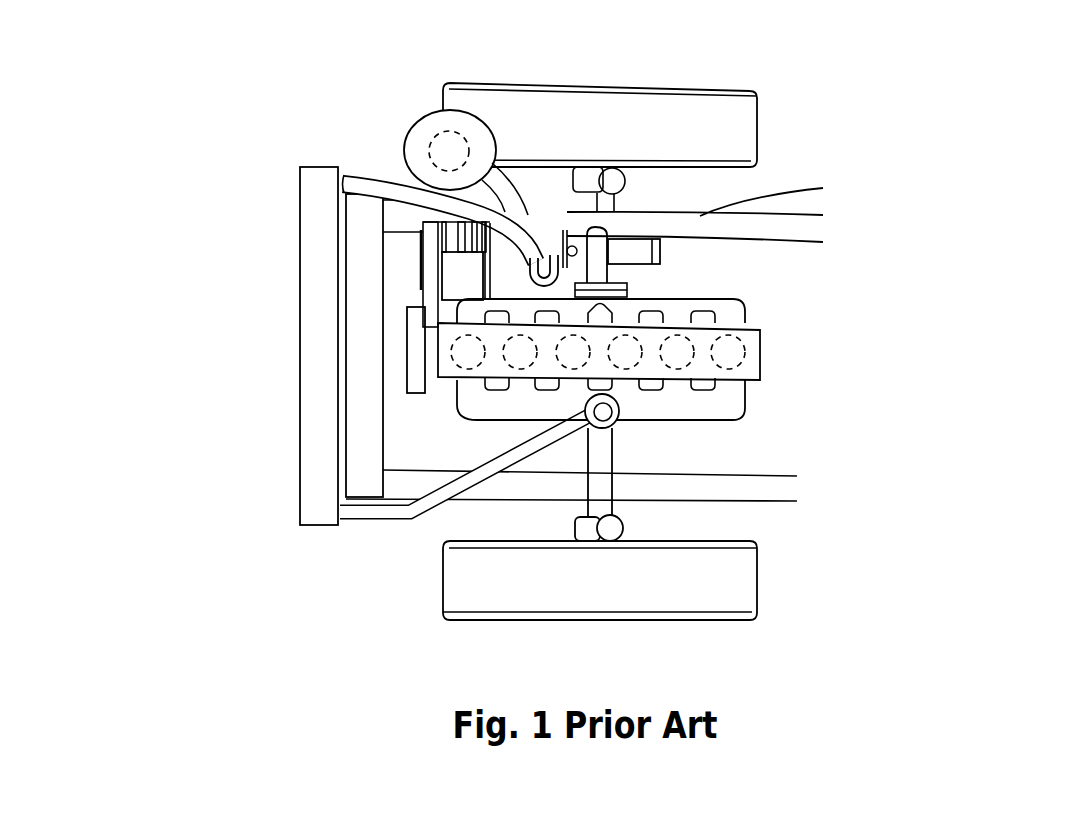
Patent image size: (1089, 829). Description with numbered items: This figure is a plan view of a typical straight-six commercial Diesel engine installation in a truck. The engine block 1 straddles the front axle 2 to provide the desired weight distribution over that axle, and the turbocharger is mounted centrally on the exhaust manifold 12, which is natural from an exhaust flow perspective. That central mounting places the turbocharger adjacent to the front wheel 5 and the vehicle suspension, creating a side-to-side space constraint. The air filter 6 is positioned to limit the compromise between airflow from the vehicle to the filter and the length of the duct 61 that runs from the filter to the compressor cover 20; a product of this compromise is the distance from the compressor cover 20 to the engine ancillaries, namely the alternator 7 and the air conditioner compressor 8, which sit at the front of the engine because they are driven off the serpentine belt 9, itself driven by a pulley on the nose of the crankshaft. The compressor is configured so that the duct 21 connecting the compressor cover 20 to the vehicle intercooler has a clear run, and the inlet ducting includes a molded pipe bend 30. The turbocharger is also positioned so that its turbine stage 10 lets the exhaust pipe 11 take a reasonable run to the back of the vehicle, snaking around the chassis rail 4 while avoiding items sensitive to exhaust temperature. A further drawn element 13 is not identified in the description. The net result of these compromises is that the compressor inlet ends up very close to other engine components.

The engine block 1 is at (737, 384).
The front axle 2 is at (597, 443).
The chassis rail 4 is at (825, 230).
The front wheel 5 is at (725, 588).
The air filter 6 is at (457, 122).
The duct 61 is at (520, 174).
The alternator 7 is at (457, 271).
The air conditioner compressor 8 is at (420, 262).
The serpentine belt 9 is at (432, 290).
The turbine stage 10 is at (633, 233).
The exhaust pipe 11 is at (657, 257).
The exhaust manifold 12 is at (737, 310).
The oil pan 13 is at (740, 427).
The compressor cover 20 is at (590, 158).
The duct 21 is at (390, 190).
The molded pipe bend 30 is at (520, 222).